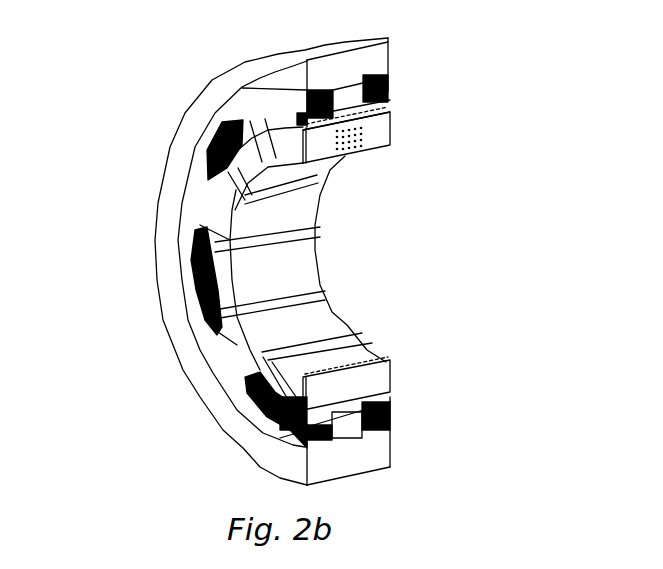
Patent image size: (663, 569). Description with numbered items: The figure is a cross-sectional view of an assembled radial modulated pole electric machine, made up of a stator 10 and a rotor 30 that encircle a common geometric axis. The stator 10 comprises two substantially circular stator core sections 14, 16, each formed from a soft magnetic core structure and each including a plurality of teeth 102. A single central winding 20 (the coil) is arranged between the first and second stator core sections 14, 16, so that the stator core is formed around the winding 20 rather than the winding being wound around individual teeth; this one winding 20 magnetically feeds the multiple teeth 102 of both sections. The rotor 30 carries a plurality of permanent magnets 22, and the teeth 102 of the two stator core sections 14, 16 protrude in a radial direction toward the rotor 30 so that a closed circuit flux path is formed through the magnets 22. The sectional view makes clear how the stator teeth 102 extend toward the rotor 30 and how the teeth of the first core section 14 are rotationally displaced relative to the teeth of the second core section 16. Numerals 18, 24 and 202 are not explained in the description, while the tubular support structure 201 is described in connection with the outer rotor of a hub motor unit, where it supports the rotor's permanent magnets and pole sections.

The stator 10 is at (352, 435).
The first stator core section 14 is at (390, 73).
The second stator core section 16 is at (190, 222).
The outer housing ring 18 is at (189, 120).
The winding 20 is at (333, 76).
The permanent magnets 22 is at (315, 290).
The tooth inner surface 24 is at (303, 257).
The rotor 30 is at (323, 335).
The teeth 102 is at (187, 284).
The tubular support structure 201 is at (370, 137).
The adhesive layer 202 is at (382, 237).